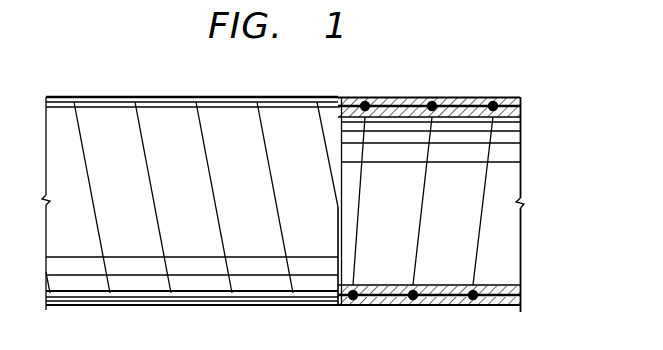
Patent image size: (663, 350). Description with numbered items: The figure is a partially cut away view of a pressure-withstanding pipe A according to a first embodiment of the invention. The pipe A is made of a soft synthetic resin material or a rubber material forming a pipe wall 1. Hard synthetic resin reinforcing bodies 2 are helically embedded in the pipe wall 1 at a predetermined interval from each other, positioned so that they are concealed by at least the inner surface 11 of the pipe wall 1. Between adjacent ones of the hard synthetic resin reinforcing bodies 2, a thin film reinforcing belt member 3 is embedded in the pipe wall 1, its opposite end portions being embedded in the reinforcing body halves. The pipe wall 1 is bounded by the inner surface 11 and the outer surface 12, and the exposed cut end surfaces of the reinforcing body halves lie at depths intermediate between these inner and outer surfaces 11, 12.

The pipe A is at (119, 97).
The pipe wall 1 is at (454, 97).
The hard synthetic resin reinforcing bodies 2 is at (489, 95).
The thin film reinforcing belt member 3 is at (400, 97).
The inner surface 11 is at (513, 263).
The outer surface 12 is at (493, 308).